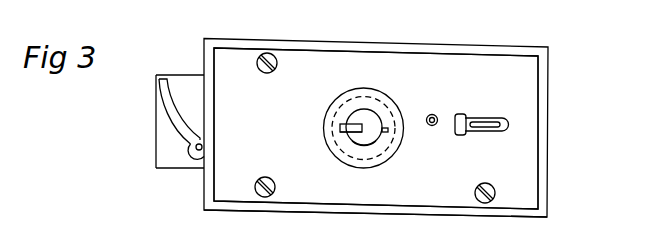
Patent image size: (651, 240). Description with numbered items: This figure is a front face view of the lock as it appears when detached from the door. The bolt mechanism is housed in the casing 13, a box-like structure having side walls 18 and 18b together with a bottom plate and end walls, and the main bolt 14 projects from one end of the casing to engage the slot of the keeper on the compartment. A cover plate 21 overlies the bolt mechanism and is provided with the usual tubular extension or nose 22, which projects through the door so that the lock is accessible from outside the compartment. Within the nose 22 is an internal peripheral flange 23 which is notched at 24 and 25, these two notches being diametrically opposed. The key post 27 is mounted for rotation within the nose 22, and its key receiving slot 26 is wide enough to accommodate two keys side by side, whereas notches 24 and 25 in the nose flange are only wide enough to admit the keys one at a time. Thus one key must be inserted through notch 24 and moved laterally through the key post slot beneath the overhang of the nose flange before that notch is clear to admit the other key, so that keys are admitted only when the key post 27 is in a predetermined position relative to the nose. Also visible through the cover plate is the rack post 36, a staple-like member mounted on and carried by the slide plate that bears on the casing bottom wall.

The casing 13 is at (307, 57).
The main bolt 14 is at (182, 75).
The side wall 18 is at (382, 43).
The side wall 18b is at (411, 214).
The cover plate 21 is at (418, 67).
The tubular extension (nose) 22 is at (347, 89).
The internal peripheral flange 23 is at (377, 115).
The notch 24 is at (340, 127).
The notch 25 is at (388, 130).
The key receiving slot 26 is at (352, 133).
The key post 27 is at (368, 138).
The rack post 36 is at (485, 121).